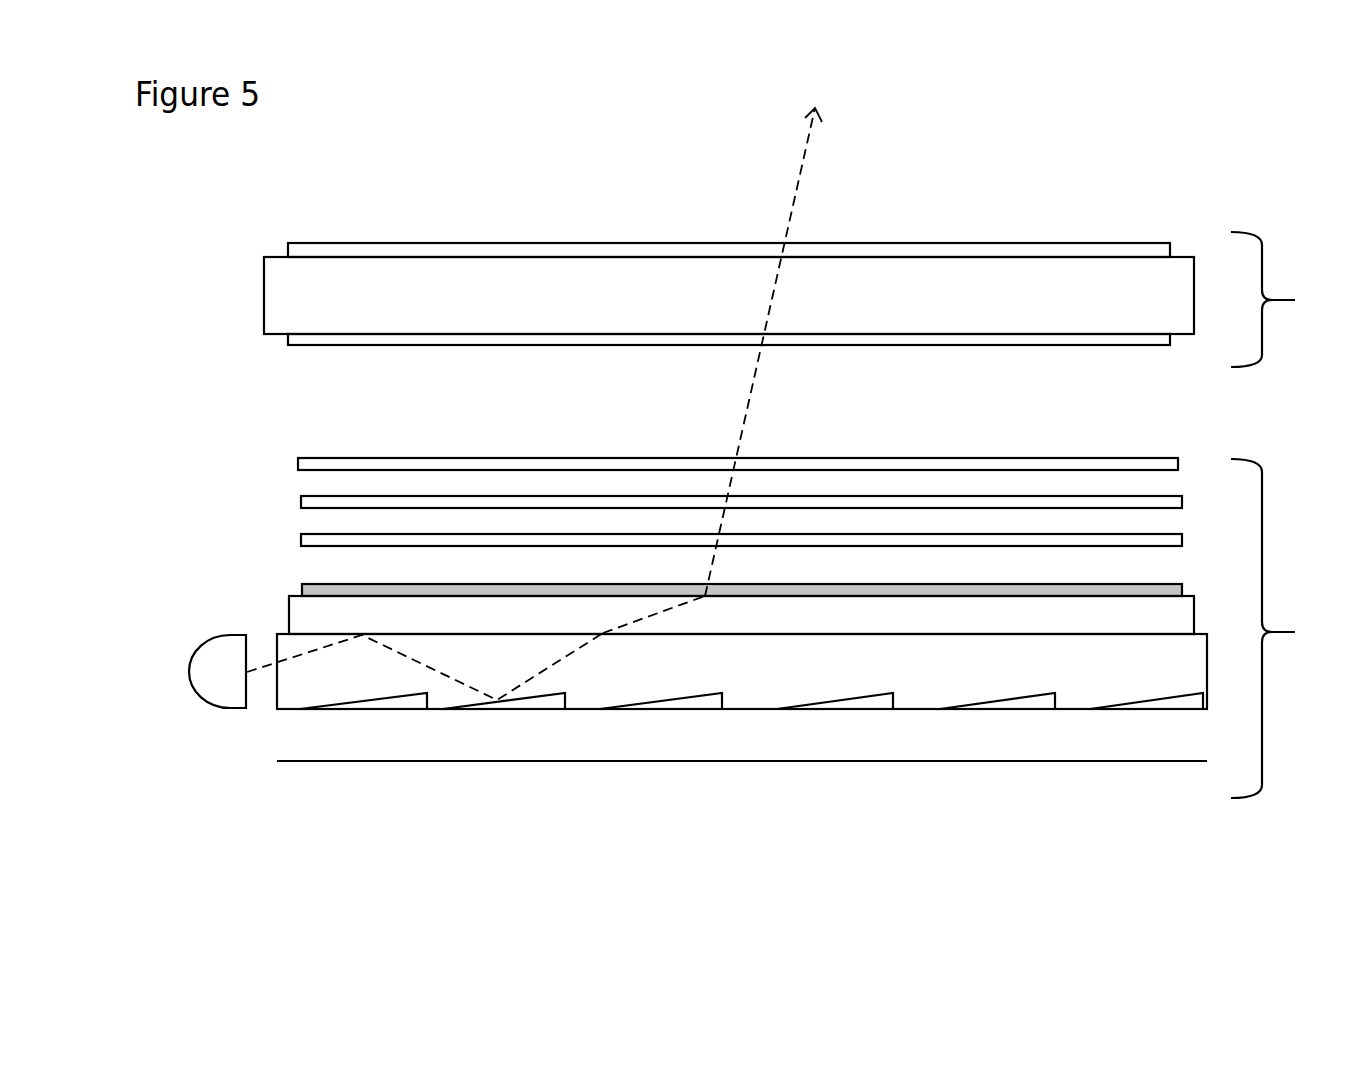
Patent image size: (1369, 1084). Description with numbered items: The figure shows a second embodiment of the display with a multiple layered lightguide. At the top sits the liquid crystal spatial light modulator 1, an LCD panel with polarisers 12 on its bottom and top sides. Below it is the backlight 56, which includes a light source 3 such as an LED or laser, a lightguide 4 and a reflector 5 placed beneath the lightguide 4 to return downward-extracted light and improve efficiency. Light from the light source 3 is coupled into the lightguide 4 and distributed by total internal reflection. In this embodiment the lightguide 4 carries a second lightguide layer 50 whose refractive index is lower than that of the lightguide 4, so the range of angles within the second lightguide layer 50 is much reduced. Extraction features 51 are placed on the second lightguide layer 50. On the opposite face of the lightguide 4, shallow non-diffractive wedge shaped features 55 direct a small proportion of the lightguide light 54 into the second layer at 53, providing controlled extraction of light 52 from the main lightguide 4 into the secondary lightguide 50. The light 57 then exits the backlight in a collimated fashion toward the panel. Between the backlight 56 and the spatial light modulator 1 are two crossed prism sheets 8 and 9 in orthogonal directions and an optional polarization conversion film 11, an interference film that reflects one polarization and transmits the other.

The liquid crystal spatial light modulator 1 is at (814, 299).
The polarisers 12 is at (317, 335).
The backlight 56 is at (1286, 628).
The polarization conversion film 11 is at (298, 460).
The prism sheet 9 is at (298, 500).
The prism sheet 8 is at (300, 539).
The extraction features 51 is at (533, 592).
The second lightguide layer 50 is at (302, 615).
The extraction of light 52 is at (705, 592).
The light source 3 is at (189, 670).
The lightguide 4 is at (278, 700).
The lightguide light 54 is at (510, 707).
The wedge shaped features 55 is at (1040, 695).
The reflector 5 is at (362, 757).
The entry point into second layer 53 is at (603, 634).
The exiting light 57 is at (797, 207).